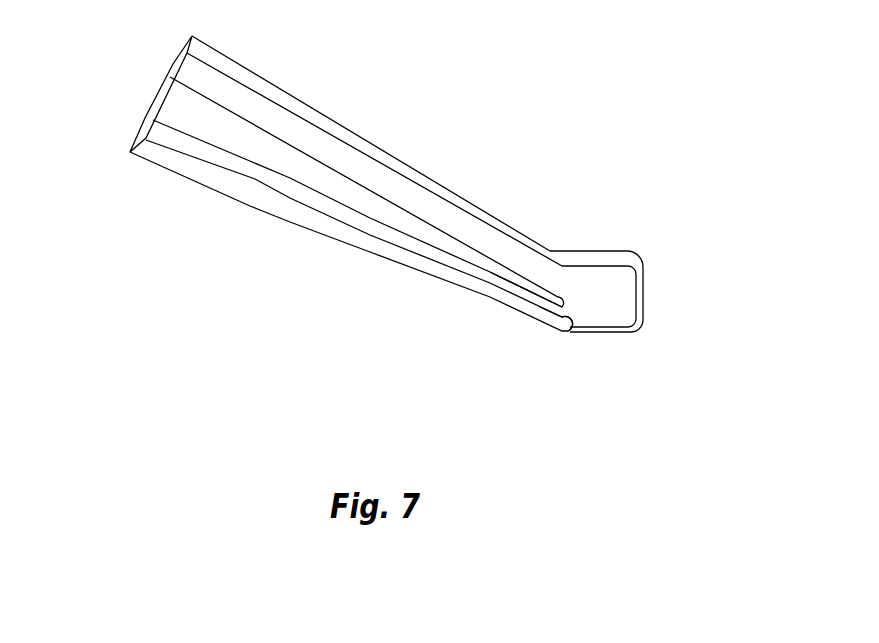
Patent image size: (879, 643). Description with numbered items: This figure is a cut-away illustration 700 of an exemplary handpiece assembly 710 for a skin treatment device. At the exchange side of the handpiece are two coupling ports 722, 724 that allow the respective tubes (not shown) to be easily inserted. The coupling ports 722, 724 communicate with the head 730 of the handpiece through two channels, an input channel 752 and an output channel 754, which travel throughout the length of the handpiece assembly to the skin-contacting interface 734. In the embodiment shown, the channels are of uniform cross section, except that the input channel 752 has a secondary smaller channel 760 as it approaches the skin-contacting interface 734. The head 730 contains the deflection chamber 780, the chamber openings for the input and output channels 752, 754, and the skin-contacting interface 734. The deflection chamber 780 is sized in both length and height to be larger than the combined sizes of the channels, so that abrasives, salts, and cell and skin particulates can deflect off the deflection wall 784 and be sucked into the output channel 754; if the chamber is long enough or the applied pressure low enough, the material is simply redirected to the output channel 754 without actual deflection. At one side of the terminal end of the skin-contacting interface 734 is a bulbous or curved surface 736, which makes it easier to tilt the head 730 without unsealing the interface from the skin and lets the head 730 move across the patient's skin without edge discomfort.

The cut-away illustration 700 is at (795, 26).
The tapered lead body 710 is at (328, 95).
The coupling port 722 is at (142, 123).
The coupling port 724 is at (175, 58).
The head 730 is at (595, 228).
The skin-contacting interface 734 is at (600, 334).
The bulbous or curved surface 736 is at (557, 330).
The input channel 752 is at (292, 195).
The output channel 754 is at (358, 160).
The secondary smaller channel 760 is at (525, 298).
The deflection chamber 780 is at (628, 280).
The deflection wall 784 is at (652, 316).